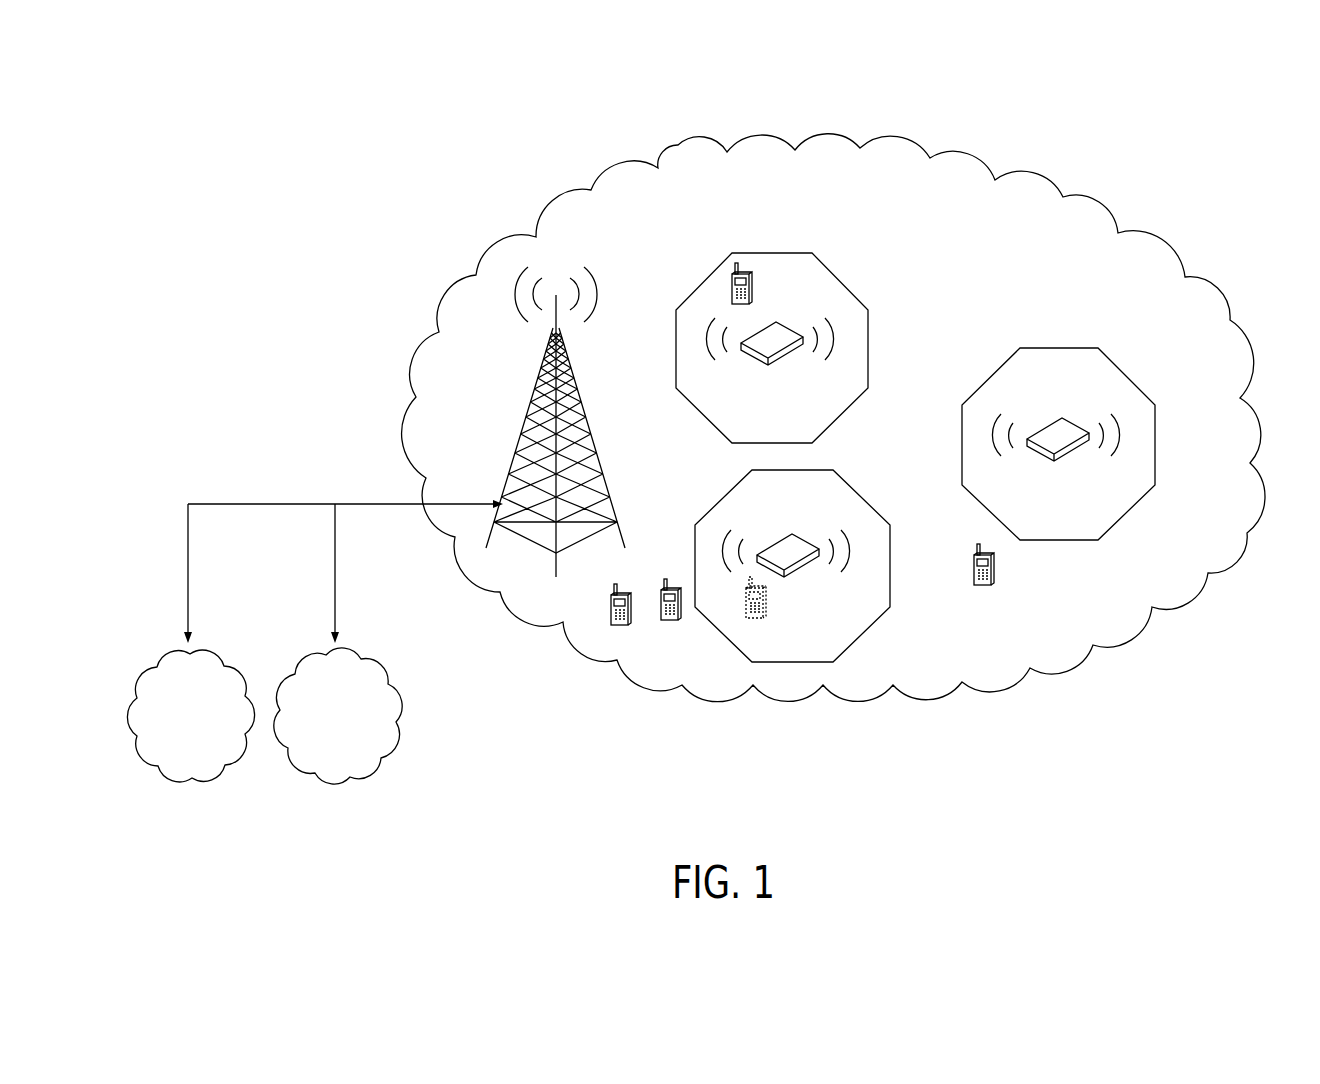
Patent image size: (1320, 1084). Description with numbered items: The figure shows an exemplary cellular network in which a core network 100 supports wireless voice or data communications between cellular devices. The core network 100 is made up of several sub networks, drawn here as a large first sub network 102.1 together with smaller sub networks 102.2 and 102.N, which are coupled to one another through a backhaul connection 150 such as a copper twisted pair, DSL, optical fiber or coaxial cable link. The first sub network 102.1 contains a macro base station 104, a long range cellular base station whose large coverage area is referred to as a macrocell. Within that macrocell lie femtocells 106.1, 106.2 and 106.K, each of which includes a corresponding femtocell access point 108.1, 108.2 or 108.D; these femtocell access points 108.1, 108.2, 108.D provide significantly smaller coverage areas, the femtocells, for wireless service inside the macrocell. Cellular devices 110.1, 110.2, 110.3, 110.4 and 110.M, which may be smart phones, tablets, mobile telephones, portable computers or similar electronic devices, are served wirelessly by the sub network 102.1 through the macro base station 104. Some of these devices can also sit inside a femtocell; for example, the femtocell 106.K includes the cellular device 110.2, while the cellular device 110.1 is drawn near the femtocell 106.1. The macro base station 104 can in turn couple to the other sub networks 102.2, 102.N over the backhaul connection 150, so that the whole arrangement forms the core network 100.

The core network 100 is at (320, 208).
The sub network 102.1 is at (678, 145).
The sub network 102.2 is at (200, 786).
The sub network 102.N is at (375, 776).
The macro base station 104 is at (583, 407).
The femtocell 106.1 is at (783, 253).
The femtocell 106.2 is at (1077, 348).
The femtocell 106.K is at (732, 490).
The femtocell access point 108.1 is at (771, 359).
The femtocell access point 108.2 is at (786, 574).
The femtocell access point 108.D is at (1055, 457).
The cellular device 110.1 is at (730, 278).
The cellular device 110.2 is at (762, 620).
The cellular device 110.3 is at (981, 587).
The cellular device 110.4 is at (612, 627).
The cellular device 110.M is at (675, 621).
The backhaul connection 150 is at (262, 504).